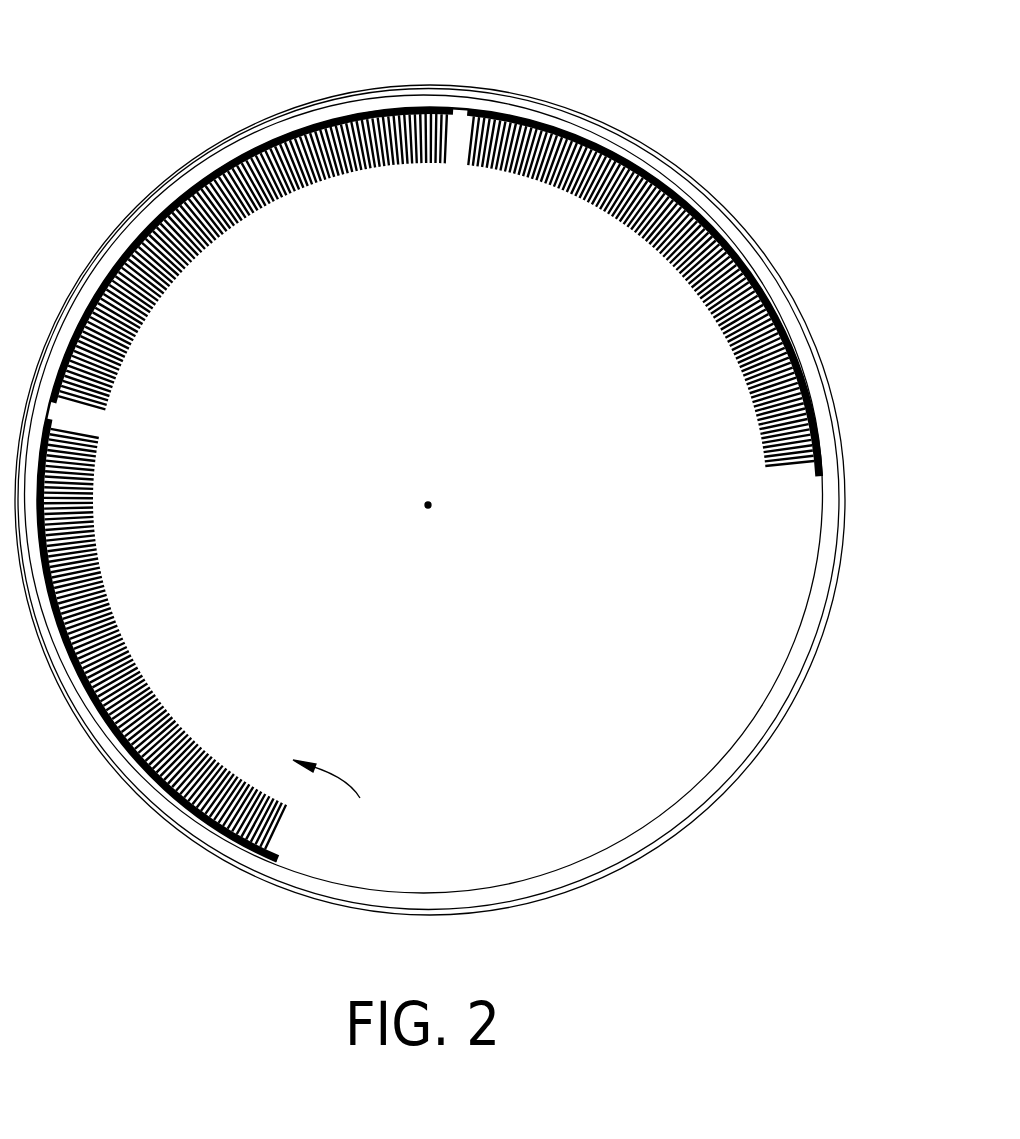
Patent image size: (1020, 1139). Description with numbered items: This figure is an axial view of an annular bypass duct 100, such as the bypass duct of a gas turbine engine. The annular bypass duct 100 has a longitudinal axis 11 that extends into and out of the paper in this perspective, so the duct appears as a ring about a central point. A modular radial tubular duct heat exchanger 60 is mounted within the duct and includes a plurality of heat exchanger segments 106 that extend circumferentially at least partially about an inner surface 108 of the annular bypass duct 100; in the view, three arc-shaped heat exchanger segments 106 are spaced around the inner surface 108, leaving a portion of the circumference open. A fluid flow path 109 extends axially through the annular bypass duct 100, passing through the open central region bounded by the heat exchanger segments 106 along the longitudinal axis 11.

The annular bypass duct 100 is at (585, 115).
The heat exchanger segments 106 is at (673, 262).
The inner surface 108 is at (642, 832).
The fluid flow path 109 is at (460, 433).
The longitudinal axis 11 is at (436, 500).
The modular radial tubular duct heat exchanger 60 is at (344, 789).